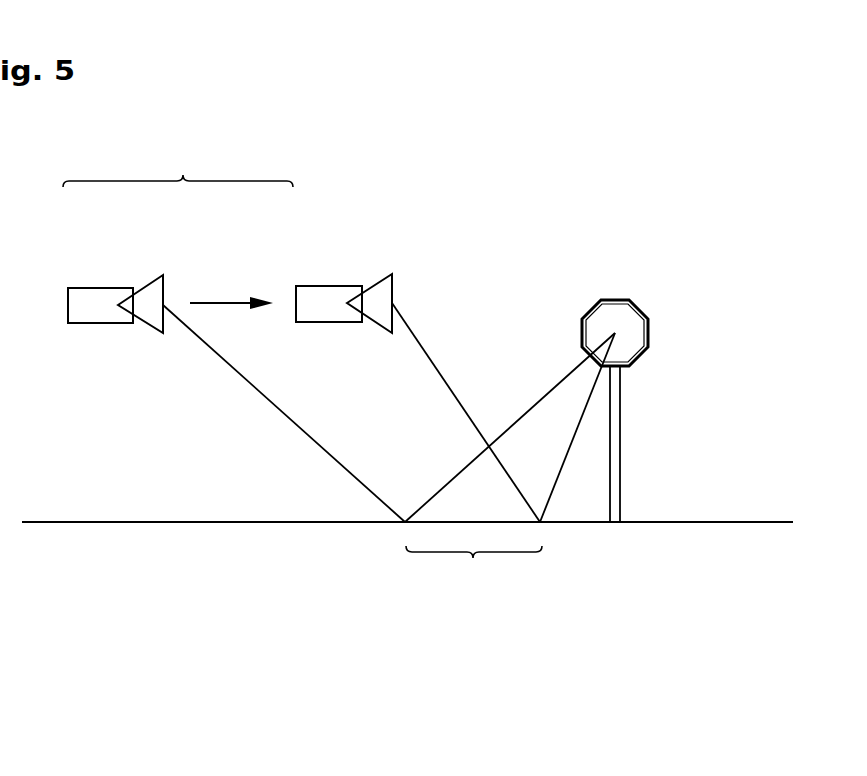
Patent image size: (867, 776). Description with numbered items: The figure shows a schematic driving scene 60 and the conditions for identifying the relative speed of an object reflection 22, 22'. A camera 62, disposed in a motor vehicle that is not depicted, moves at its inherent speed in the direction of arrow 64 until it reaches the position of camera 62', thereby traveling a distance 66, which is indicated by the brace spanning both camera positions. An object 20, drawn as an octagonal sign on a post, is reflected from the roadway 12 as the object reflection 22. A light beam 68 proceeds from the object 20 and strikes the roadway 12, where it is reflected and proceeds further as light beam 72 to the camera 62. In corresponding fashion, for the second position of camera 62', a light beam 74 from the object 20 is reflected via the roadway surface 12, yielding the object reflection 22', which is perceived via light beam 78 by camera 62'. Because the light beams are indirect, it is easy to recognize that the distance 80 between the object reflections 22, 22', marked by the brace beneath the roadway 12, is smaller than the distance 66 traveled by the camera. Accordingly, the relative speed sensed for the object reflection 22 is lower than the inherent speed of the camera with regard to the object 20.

The driving scene 60 is at (453, 174).
The roadway 12 is at (155, 523).
The distance 66 is at (178, 162).
The camera 62 is at (115, 342).
The camera position 62' is at (344, 341).
The arrow 64 is at (222, 302).
The light beam 72 is at (221, 357).
The light beam 78 is at (424, 351).
The light beam 68 is at (548, 392).
The light beam 74 is at (573, 438).
The object 20 is at (646, 329).
The distance 80 is at (474, 574).
The object reflection 22 is at (366, 597).
The object reflection 22' is at (592, 597).